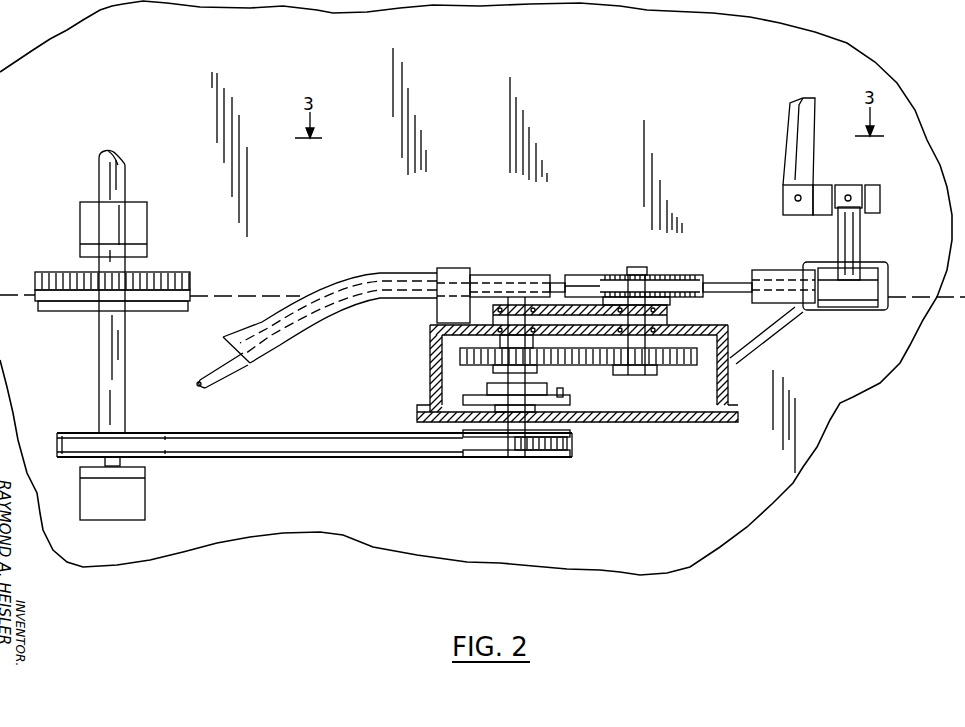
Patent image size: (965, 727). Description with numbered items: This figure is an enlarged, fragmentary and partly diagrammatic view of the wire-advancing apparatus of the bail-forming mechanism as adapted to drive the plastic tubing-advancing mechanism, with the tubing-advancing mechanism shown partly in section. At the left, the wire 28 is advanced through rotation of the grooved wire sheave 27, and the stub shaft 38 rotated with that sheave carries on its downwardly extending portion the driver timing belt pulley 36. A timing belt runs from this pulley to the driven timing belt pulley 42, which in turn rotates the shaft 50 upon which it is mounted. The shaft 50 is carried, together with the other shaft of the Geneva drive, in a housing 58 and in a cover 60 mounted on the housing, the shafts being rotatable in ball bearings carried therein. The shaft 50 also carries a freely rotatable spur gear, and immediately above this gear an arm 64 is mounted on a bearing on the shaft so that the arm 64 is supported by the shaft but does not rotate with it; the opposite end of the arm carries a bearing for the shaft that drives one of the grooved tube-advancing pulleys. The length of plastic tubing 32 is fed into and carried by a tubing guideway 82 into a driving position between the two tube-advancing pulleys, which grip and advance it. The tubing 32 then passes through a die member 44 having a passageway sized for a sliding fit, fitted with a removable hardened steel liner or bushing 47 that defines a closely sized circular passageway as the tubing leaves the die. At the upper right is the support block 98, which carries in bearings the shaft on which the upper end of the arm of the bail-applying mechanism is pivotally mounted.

The grooved wire sheave 27 is at (175, 272).
The wire 28 is at (234, 169).
The tubing 32 is at (209, 381).
The driver timing belt pulley 36 is at (146, 441).
The stub shaft 38 is at (104, 393).
The driven timing belt pulley 42 is at (560, 457).
The die member 44 is at (780, 268).
The hardened steel liner or bushing 47 is at (758, 270).
The shaft 50 is at (513, 288).
The housing 58 is at (725, 398).
The cover 60 is at (681, 423).
The arm 64 is at (448, 348).
The tubing guideway 82 is at (347, 284).
The support block 98 is at (878, 212).